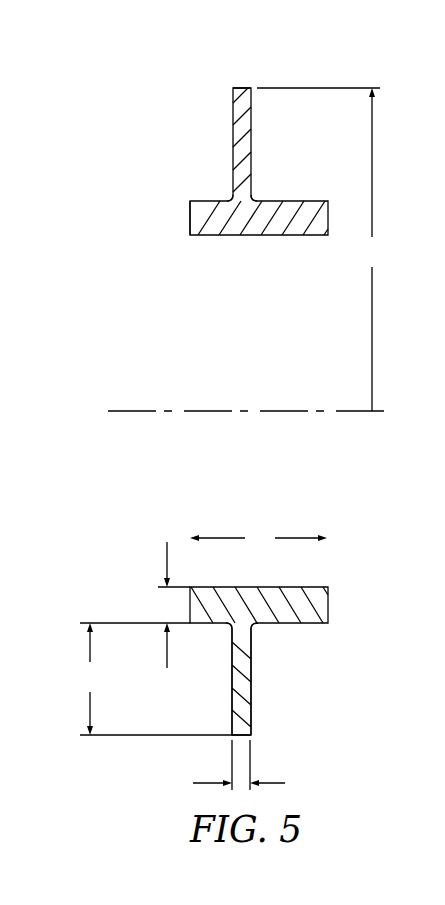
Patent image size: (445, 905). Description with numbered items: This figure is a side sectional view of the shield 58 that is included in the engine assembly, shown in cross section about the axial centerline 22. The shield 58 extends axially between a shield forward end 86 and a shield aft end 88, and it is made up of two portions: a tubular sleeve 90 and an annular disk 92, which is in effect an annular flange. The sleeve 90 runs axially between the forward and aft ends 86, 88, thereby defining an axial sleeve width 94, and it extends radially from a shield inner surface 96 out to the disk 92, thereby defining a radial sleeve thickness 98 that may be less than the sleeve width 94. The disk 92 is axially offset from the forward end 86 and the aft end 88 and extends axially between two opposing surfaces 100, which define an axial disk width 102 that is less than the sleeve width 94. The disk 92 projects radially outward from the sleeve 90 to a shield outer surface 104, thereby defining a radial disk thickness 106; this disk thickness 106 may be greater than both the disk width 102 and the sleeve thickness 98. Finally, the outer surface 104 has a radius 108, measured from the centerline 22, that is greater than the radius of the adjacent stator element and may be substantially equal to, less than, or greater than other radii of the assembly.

The axial centerline 22 is at (125, 411).
The shield 58 is at (237, 378).
The shield forward end 86 is at (190, 217).
The shield aft end 88 is at (328, 218).
The tubular sleeve 90 is at (203, 199).
The annular disk 92 is at (233, 142).
The axial sleeve width 94 is at (258, 541).
The shield inner surface 96 is at (305, 587).
The radial sleeve thickness 98 is at (167, 553).
The opposing surfaces 100 is at (232, 707).
The axial disk width 102 is at (193, 783).
The shield outer surface 104 is at (245, 87).
The radial disk thickness 106 is at (152, 679).
The radius 108 is at (324, 249).